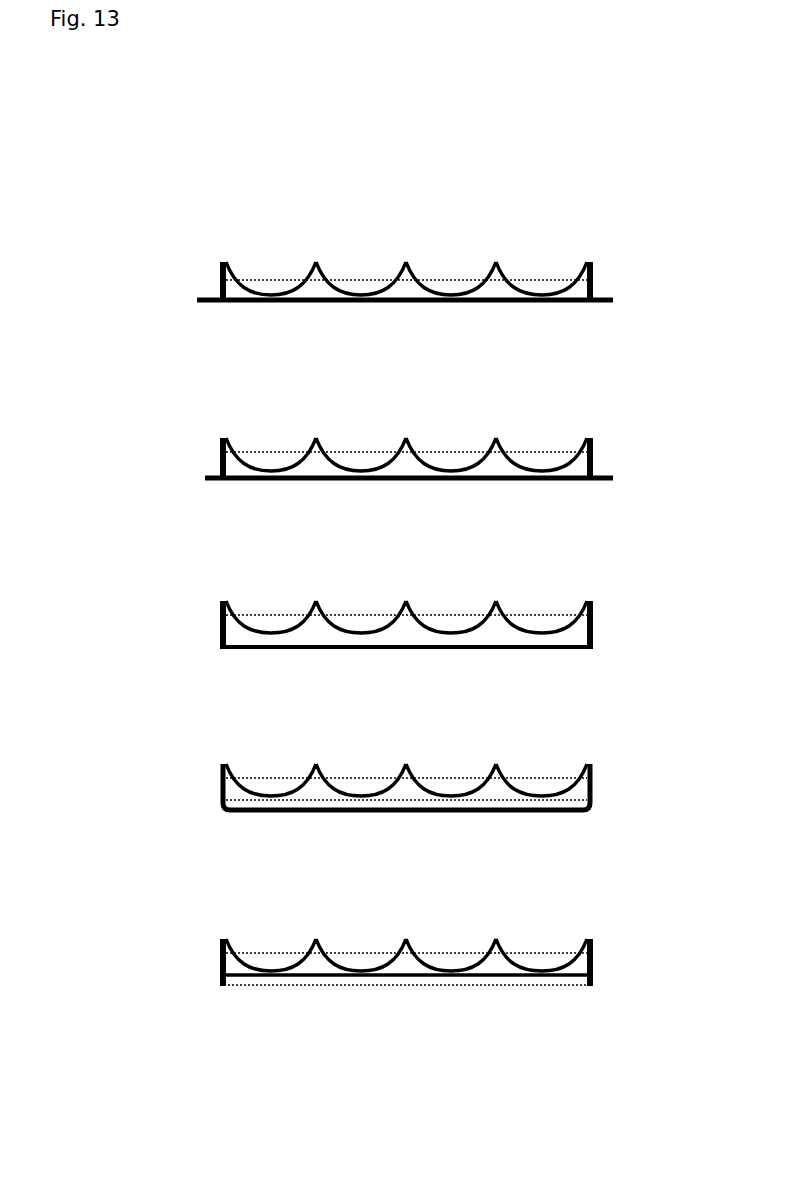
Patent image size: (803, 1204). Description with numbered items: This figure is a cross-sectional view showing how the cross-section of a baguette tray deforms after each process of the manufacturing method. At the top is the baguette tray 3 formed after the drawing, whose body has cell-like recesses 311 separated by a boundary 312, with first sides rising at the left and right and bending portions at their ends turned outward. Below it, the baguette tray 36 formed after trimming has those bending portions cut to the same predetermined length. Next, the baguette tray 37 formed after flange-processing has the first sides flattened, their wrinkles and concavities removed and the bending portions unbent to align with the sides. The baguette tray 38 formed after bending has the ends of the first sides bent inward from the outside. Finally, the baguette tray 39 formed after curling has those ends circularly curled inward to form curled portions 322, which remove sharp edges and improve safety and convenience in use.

The baguette tray 3 is at (142, 166).
The concave portion 311 is at (276, 292).
The boundary 312 is at (317, 261).
The curled portion 322 is at (219, 986).
The baguette tray 36 is at (178, 420).
The baguette tray 37 is at (178, 585).
The baguette tray 38 is at (178, 740).
The baguette tray 39 is at (178, 920).